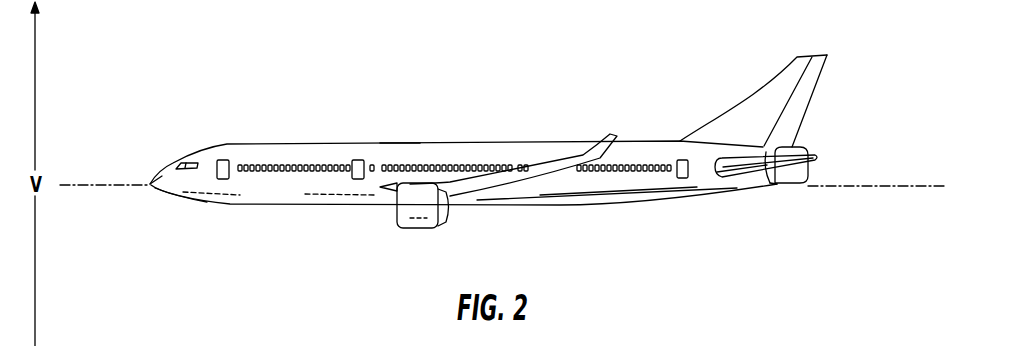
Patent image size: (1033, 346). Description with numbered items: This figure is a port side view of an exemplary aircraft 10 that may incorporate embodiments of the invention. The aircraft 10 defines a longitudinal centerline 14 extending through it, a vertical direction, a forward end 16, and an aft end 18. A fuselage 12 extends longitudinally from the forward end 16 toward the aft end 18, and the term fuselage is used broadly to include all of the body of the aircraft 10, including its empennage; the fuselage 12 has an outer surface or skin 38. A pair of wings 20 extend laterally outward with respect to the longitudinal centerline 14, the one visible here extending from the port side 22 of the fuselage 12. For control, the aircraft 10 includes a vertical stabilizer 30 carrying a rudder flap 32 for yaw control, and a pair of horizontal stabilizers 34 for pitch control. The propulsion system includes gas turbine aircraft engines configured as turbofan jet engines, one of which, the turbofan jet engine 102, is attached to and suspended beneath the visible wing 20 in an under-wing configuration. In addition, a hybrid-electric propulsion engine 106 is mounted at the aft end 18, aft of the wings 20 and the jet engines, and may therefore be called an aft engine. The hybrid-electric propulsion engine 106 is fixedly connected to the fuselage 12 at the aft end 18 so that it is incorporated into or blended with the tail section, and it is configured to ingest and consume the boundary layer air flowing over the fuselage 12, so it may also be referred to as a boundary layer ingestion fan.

The aircraft 10 is at (200, 90).
The fuselage 12 is at (247, 193).
The longitudinal centerline 14 is at (73, 186).
The forward end 16 is at (155, 203).
The aft end 18 is at (741, 205).
The wing 20 is at (547, 170).
The port side 22 is at (603, 200).
The vertical stabilizer 30 is at (772, 92).
The rudder flap 32 is at (818, 86).
The horizontal stabilizer 34 is at (773, 183).
The outer surface or skin 38 is at (403, 136).
The turbofan jet engine 102 is at (398, 236).
The hybrid-electric propulsion engine 106 is at (812, 128).